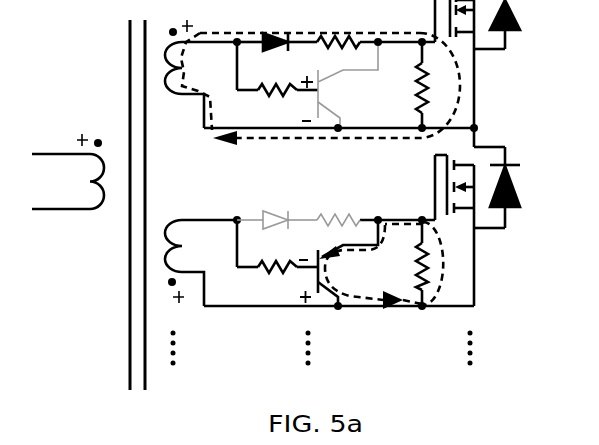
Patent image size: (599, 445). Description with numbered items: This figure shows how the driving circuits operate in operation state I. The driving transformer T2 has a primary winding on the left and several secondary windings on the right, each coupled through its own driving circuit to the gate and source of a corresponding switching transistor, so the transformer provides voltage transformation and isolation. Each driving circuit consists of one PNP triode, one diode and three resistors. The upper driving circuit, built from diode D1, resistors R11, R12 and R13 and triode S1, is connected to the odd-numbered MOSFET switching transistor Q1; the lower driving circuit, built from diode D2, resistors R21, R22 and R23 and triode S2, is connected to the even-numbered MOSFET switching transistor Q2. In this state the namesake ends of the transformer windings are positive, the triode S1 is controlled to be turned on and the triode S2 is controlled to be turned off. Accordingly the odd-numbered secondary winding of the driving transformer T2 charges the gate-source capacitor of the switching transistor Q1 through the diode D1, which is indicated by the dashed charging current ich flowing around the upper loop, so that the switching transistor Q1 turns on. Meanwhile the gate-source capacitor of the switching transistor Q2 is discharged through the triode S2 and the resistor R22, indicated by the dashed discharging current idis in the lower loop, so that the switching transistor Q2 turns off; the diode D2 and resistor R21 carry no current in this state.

The driving transformer T2 is at (252, 205).
The diode D1 is at (273, 30).
The resistor R11 is at (340, 28).
The resistor R12 is at (402, 88).
The resistor R13 is at (285, 103).
The PNP triode S1 is at (348, 85).
The MOSFET switching transistor Q1 is at (503, 82).
The charging current ich is at (320, 89).
The diode D2 is at (277, 206).
The resistor R21 is at (339, 206).
The resistor R22 is at (403, 266).
The resistor R23 is at (284, 283).
The PNP triode S2 is at (348, 263).
The MOSFET switching transistor Q2 is at (502, 230).
The discharging current idis is at (384, 281).